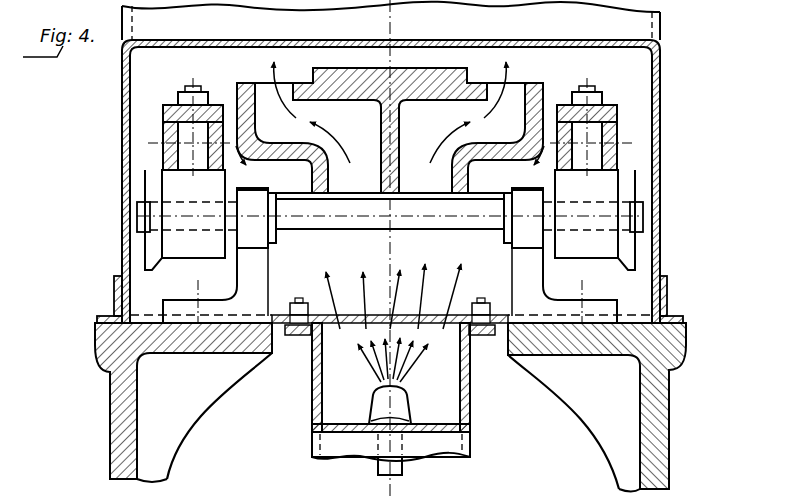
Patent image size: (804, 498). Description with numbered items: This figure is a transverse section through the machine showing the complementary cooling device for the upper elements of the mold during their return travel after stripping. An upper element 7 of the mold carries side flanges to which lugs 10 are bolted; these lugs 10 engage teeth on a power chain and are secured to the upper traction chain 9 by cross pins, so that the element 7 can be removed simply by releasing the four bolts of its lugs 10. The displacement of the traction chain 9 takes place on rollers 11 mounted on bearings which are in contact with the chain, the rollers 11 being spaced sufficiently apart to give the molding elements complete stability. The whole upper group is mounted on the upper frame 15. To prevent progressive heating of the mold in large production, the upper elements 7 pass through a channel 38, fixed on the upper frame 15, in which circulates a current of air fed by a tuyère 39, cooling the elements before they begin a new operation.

The channel 38 is at (575, 39).
The upper element 7 is at (397, 125).
The upper traction chain 9 is at (611, 155).
The lug 10 is at (190, 134).
The roller 11 is at (173, 184).
The upper frame 15 is at (125, 424).
The tuyère 39 is at (405, 410).